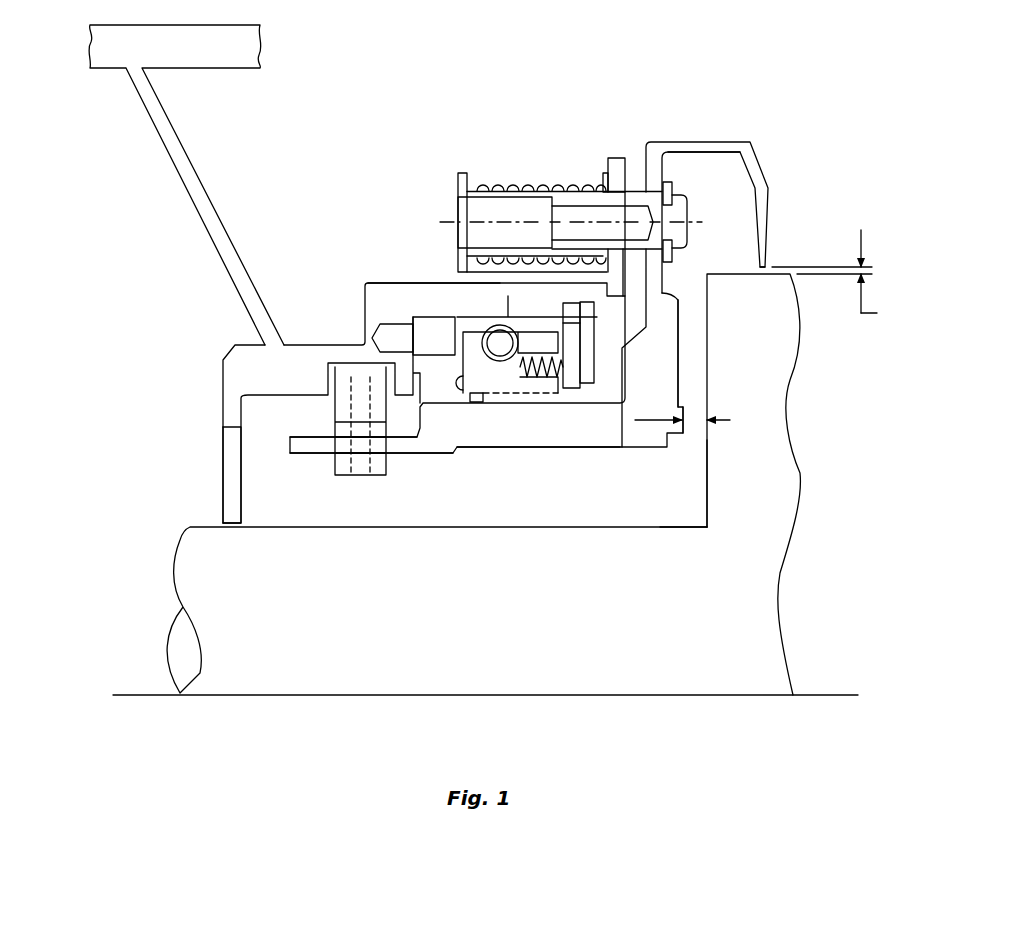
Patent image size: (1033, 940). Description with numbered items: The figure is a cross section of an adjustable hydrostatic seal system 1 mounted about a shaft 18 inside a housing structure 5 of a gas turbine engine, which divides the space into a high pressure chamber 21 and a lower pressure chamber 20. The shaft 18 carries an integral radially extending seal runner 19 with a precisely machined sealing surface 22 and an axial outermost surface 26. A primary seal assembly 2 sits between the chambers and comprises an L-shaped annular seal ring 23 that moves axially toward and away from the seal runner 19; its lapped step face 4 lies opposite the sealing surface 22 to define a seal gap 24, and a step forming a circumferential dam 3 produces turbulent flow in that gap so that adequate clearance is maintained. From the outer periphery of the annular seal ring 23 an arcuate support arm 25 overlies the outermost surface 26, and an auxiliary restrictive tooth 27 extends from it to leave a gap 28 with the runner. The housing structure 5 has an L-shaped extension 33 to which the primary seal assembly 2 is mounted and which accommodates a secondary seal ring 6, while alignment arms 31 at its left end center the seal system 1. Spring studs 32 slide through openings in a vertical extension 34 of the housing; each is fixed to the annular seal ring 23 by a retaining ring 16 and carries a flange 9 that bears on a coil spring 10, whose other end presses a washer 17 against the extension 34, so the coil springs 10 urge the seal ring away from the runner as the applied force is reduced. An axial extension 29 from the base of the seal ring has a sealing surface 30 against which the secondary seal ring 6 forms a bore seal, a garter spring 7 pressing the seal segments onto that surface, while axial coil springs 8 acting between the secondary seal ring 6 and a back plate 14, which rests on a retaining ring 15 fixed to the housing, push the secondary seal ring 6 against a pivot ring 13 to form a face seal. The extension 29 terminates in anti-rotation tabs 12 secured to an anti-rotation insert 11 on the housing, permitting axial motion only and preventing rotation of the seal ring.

The seal system 1 is at (812, 172).
The primary seal assembly 2 is at (683, 141).
The circumferential dam 3 is at (720, 440).
The step face 4 is at (680, 360).
The housing structure 5 is at (315, 343).
The secondary seal ring 6 is at (510, 383).
The garter spring 7 is at (487, 337).
The axial coil springs 8 is at (533, 377).
The flange 9 is at (460, 182).
The coil spring 10 is at (527, 176).
The anti-rotation insert 11 is at (340, 410).
The anti-rotation tabs 12 is at (297, 447).
The pivot ring 13 is at (435, 387).
The back plate 14 is at (567, 383).
The retaining ring 15 is at (585, 375).
The retaining ring 16 is at (673, 185).
The washer 17 is at (603, 172).
The shaft 18 is at (207, 578).
The seal runner 19 is at (730, 467).
The lower pressure chamber 20 is at (453, 403).
The high pressure chamber 21 is at (854, 196).
The sealing surface 22 is at (705, 472).
The annular seal ring 23 is at (658, 383).
The seal gap 24 is at (730, 420).
The arcuate support arm 25 is at (733, 150).
The outermost surface 26 is at (745, 273).
The auxiliary restrictive tooth 27 is at (768, 223).
The gap 28 is at (842, 280).
The extension 29 is at (485, 435).
The sealing surface 30 is at (453, 407).
The alignment arms 31 is at (228, 490).
The spring studs 32 is at (633, 190).
The extension 33 is at (443, 282).
The vertical extension 34 is at (612, 157).